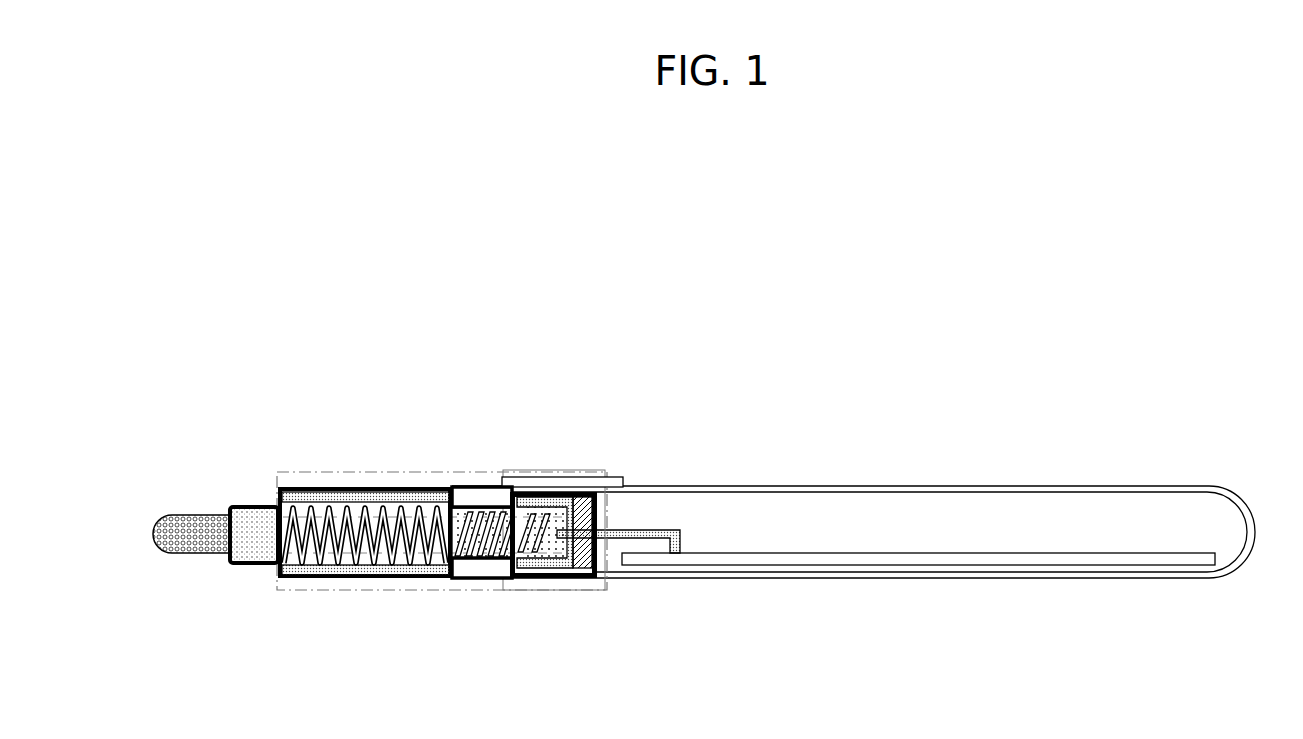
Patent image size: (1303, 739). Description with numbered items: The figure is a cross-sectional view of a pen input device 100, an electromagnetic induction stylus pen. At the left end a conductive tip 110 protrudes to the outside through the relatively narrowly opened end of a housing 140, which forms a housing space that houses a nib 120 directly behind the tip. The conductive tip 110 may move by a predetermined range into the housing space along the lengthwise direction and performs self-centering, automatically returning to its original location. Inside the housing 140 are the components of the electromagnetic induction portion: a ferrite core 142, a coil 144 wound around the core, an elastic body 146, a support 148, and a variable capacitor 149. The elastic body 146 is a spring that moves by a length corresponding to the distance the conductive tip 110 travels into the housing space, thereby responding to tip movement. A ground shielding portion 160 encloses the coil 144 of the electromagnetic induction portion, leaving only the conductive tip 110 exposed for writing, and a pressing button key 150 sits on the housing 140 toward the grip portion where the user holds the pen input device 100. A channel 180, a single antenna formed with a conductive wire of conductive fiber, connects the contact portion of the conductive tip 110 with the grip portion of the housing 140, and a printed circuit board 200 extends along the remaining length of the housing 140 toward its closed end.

The pen input device 100 is at (860, 441).
The conductive tip 110 is at (190, 515).
The nib 120 is at (251, 505).
The housing 140 is at (975, 486).
The ferrite core 142 is at (255, 550).
The coil 144 is at (362, 571).
The elastic body 146 is at (483, 563).
The support 148 is at (540, 498).
The variable capacitor 149 is at (583, 570).
The pressing button key 150 is at (573, 474).
The ground shielding portion 160 is at (367, 471).
The channel 180 is at (664, 530).
The printed circuit board 200 is at (1060, 558).